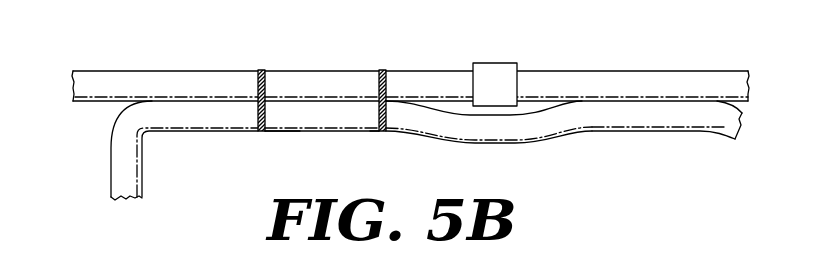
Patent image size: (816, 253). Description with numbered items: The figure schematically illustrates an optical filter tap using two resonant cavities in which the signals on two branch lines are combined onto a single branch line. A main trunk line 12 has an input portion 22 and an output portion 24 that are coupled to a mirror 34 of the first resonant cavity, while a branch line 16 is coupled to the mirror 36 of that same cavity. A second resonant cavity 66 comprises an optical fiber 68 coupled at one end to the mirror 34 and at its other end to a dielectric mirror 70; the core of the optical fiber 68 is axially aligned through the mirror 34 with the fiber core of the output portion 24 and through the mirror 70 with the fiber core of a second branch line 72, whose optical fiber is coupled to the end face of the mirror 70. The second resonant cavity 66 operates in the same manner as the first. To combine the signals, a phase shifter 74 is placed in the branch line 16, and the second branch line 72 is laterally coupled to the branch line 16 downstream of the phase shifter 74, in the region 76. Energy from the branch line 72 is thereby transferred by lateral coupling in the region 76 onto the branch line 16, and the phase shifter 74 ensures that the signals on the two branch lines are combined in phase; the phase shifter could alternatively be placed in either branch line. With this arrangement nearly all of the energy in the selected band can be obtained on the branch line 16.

The main trunk line 12 is at (99, 140).
The branch line 16 is at (427, 70).
The input portion 22 is at (139, 71).
The output portion 24 is at (200, 133).
The mirror 34 is at (262, 70).
The mirror 36 is at (384, 70).
The second resonant cavity 66 is at (287, 144).
The optical fiber 68 is at (342, 133).
The dielectric mirror 70 is at (385, 133).
The second branch line 72 is at (458, 144).
The phase shifter 74 is at (495, 68).
The region 76 is at (627, 138).